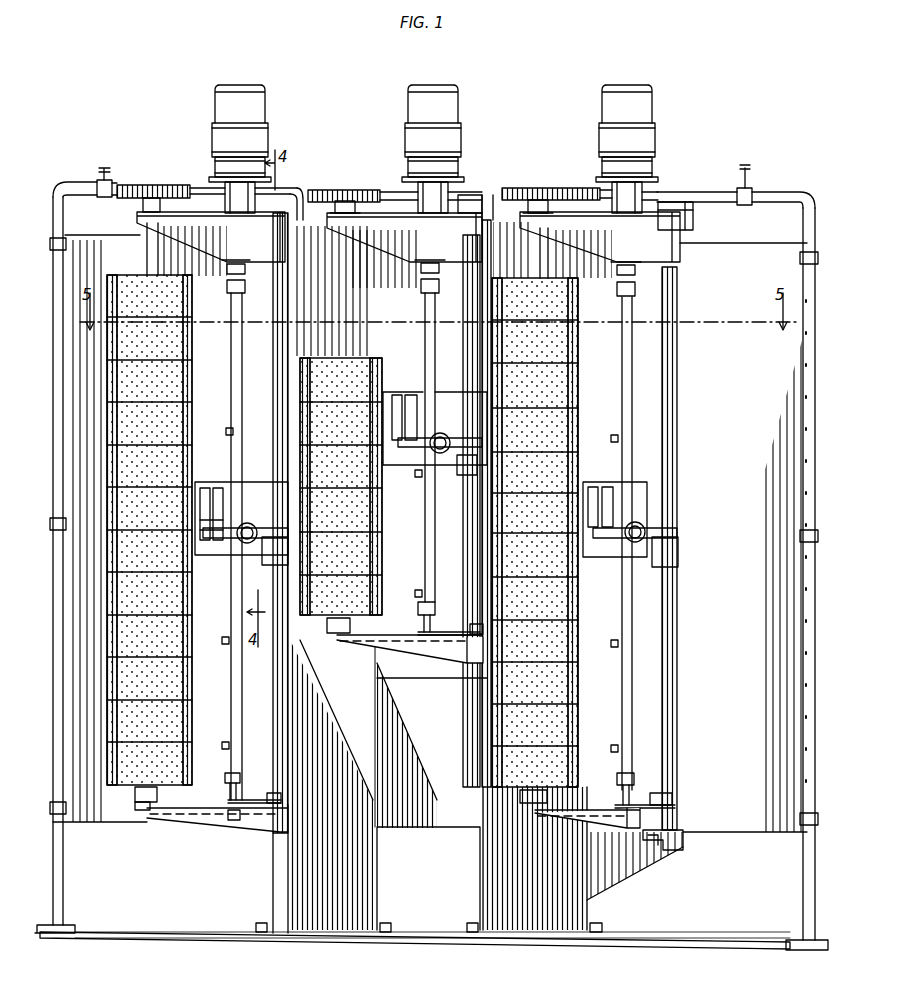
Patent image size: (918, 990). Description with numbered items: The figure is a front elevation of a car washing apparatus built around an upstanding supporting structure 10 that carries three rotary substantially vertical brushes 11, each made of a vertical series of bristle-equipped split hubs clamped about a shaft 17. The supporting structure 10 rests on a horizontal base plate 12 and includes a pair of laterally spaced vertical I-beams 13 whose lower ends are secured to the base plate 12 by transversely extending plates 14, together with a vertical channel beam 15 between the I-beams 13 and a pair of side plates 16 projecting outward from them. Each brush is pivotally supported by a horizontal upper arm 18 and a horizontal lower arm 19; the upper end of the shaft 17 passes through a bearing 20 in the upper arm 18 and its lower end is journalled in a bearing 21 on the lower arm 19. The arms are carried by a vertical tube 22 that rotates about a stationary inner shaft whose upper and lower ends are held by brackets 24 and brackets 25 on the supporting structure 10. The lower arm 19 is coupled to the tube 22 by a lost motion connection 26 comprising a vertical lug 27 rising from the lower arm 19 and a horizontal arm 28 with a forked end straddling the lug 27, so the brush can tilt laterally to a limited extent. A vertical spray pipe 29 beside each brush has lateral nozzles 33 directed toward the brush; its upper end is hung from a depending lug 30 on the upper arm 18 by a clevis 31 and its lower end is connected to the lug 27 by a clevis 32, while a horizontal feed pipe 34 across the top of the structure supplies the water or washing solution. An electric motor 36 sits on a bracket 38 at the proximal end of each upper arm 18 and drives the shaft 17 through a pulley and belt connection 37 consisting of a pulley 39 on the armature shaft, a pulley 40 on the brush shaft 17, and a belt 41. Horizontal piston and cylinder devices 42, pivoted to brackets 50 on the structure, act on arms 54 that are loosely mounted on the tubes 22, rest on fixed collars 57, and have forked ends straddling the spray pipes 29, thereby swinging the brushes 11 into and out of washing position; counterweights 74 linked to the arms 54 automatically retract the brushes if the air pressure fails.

The supporting structure 10 is at (270, 891).
The rotary brushes 11 is at (184, 387).
The base plate 12 is at (420, 940).
The I-beams 13 is at (278, 915).
The transversely extending plates 14 is at (480, 870).
The channel beam 15 is at (412, 827).
The side plates 16 is at (62, 832).
The brush shafts 17 is at (147, 255).
The upper arms 18 is at (408, 237).
The lower arms 19 is at (203, 820).
The bearings 20 is at (157, 187).
The bearings 21 is at (137, 813).
The tubes 22 is at (288, 702).
The brackets 24 is at (680, 202).
The brackets 25 is at (683, 847).
The lost motion connections 26 is at (268, 798).
The lugs 27 is at (225, 778).
The arms 28 is at (228, 800).
The spray pipes 29 is at (243, 386).
The depending lugs 30 is at (422, 270).
The clevices 31 is at (422, 288).
The clevices 32 is at (418, 612).
The nozzles 33 is at (227, 431).
The feed pipe 34 is at (93, 197).
The electric motors 36 is at (268, 108).
The pulley and belt connections 37 is at (136, 179).
The brackets 38 is at (658, 180).
The pulleys 39 is at (420, 197).
The pulleys 40 is at (307, 187).
The belts 41 is at (481, 229).
The piston and cylinder devices 42 is at (247, 524).
The brackets 50 is at (443, 400).
The arms 54 is at (465, 447).
The fixed collars 57 is at (262, 560).
The counterweights 74 is at (207, 493).